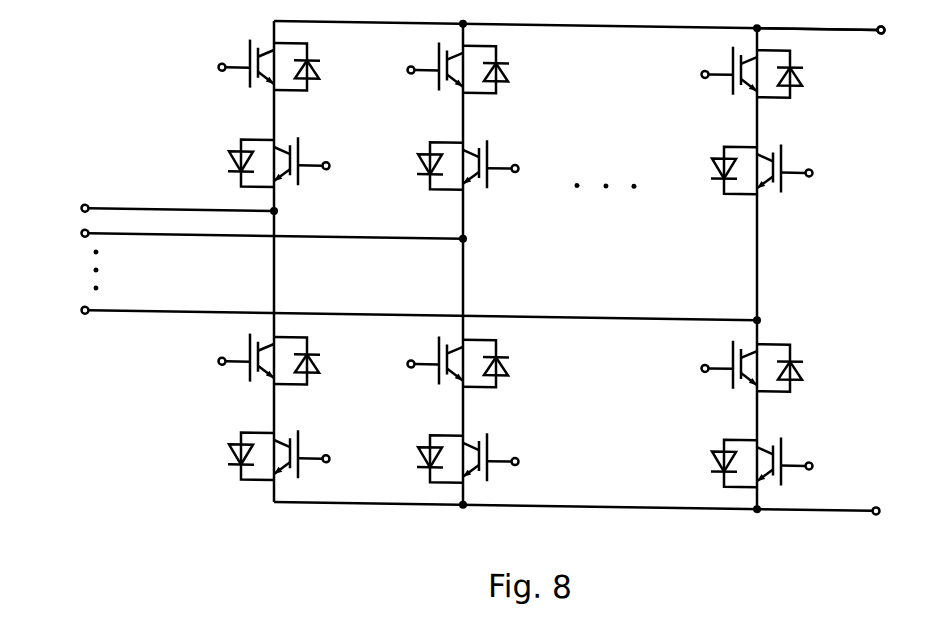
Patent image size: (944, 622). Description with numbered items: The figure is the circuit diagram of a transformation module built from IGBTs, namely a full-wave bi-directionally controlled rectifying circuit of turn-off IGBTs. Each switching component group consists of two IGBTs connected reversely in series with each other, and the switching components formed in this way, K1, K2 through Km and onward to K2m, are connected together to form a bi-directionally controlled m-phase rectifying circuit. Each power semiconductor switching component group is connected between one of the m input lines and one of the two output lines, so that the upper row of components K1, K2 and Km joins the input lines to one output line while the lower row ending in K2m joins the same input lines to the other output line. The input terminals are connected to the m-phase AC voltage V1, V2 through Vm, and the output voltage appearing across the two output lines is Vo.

The switching component K1 is at (212, 113).
The switching component K2 is at (415, 120).
The switching component Km is at (708, 122).
The switching component K2m is at (703, 409).
The AC voltage V1 is at (149, 203).
The AC voltage V2 is at (244, 240).
The AC voltage Vm is at (391, 310).
The output voltage Vo is at (825, 54).